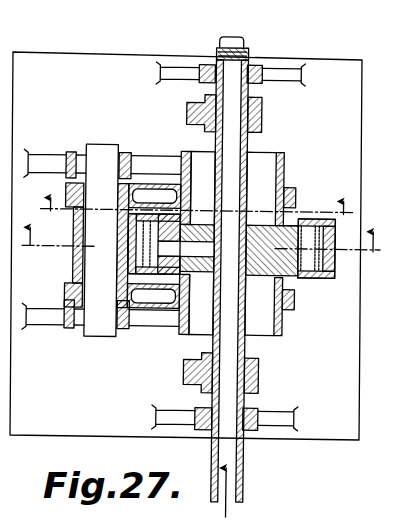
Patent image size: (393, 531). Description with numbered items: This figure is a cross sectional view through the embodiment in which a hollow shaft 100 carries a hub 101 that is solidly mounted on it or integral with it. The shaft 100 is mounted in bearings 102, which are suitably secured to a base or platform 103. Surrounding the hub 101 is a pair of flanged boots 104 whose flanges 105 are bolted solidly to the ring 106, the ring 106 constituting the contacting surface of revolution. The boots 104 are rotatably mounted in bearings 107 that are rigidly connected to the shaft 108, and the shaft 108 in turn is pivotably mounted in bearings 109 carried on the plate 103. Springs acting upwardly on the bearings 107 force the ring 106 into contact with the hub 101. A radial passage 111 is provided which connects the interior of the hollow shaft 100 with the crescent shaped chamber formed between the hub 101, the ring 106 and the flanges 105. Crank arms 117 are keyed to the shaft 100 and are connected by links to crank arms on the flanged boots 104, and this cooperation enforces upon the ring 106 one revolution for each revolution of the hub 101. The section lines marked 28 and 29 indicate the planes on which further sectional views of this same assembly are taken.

The hollow shaft 100 is at (246, 340).
The hub 101 is at (288, 268).
The bearings 102 is at (255, 64).
The base or platform 103 is at (337, 75).
The flanged boots 104 is at (283, 163).
The flanges 105 is at (302, 222).
The ring 106 is at (126, 252).
The bearings 107 is at (290, 187).
The shaft 108 is at (98, 338).
The bearings 109 is at (129, 153).
The radial passage 111 is at (197, 258).
The crank arms 117 is at (260, 378).
The section line 28- 28 is at (201, 227).
The section line 29- 29 is at (194, 193).